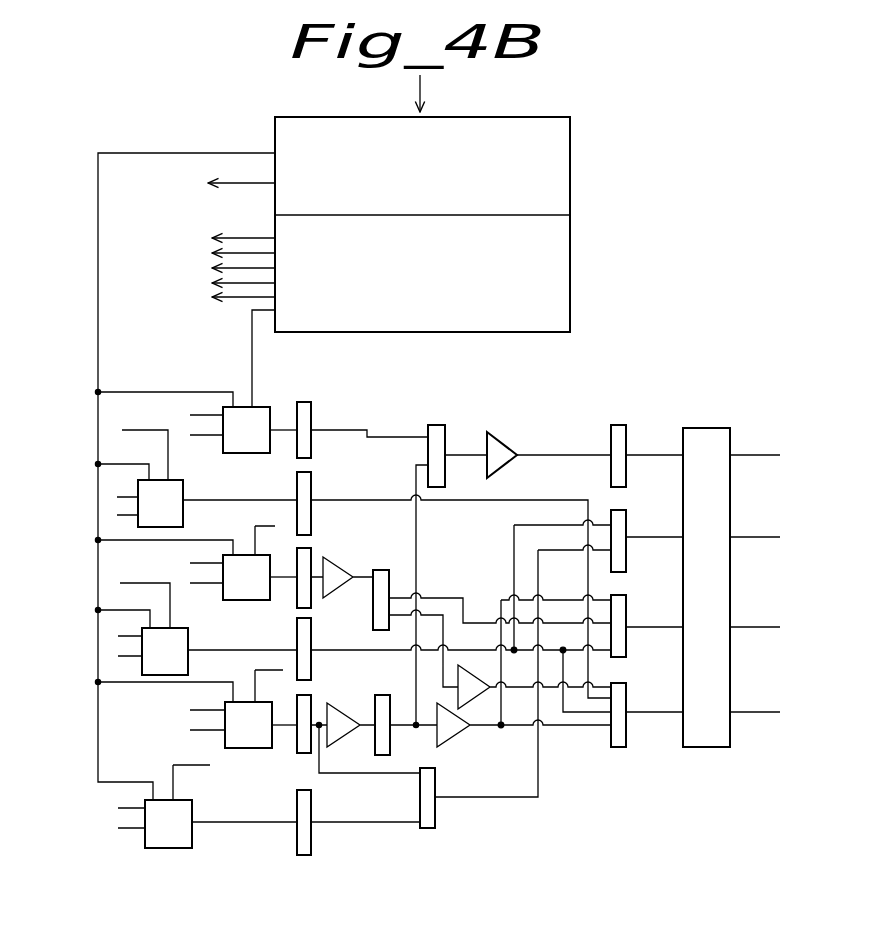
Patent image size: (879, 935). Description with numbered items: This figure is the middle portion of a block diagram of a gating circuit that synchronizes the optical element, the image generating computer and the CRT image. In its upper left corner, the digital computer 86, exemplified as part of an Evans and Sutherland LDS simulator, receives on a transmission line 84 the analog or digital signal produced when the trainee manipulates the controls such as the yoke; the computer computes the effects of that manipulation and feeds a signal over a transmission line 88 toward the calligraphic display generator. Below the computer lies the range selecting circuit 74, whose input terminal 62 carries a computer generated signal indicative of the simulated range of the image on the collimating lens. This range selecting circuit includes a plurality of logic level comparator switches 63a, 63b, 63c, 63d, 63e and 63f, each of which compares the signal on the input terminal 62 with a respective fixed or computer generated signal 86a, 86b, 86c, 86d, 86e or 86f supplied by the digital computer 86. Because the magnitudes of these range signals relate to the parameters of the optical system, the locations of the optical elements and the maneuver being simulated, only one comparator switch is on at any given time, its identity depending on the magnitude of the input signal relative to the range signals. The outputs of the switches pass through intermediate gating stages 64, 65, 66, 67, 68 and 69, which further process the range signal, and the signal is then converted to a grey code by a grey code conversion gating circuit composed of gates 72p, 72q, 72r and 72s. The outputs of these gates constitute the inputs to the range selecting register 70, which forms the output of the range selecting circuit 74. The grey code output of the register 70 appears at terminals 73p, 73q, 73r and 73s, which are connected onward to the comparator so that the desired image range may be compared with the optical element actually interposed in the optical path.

The transmission line 84 is at (420, 98).
The digital computer 86 is at (572, 144).
The transmission line 88 is at (232, 183).
The computer generated signal 86a is at (251, 312).
The computer generated signal 86b is at (210, 297).
The computer generated signal 86c is at (210, 282).
The computer generated signal 86d is at (210, 267).
The computer generated signal 86e is at (210, 252).
The computer generated signal 86f is at (229, 238).
The input terminal 62 is at (98, 327).
The logic level comparator switch 63a is at (258, 409).
The logic level comparator switch 63b is at (180, 497).
The logic level comparator switch 63c is at (238, 600).
The logic level comparator switch 63d is at (183, 653).
The logic level comparator switch 63e is at (236, 748).
The logic level comparator switch 63f is at (190, 818).
The intermediate gating stage 64 is at (306, 421).
The intermediate gating stage 65 is at (306, 494).
The intermediate gating stage 66 is at (306, 562).
The intermediate gating stage 67 is at (306, 648).
The intermediate gating stage 68 is at (306, 704).
The intermediate gating stage 69 is at (306, 822).
The range selecting circuit 74 is at (504, 429).
The grey code conversion gate 72p is at (619, 438).
The grey code conversion gate 72q is at (619, 546).
The grey code conversion gate 72r is at (619, 632).
The grey code conversion gate 72s is at (619, 720).
The range selecting register 70 is at (692, 428).
The terminal 73p is at (752, 455).
The terminal 73q is at (745, 537).
The terminal 73r is at (745, 627).
The terminal 73s is at (745, 712).